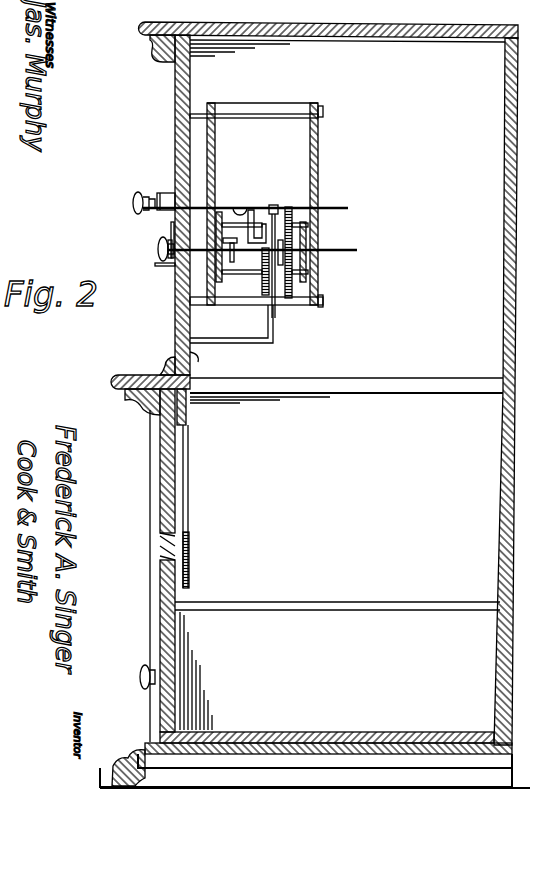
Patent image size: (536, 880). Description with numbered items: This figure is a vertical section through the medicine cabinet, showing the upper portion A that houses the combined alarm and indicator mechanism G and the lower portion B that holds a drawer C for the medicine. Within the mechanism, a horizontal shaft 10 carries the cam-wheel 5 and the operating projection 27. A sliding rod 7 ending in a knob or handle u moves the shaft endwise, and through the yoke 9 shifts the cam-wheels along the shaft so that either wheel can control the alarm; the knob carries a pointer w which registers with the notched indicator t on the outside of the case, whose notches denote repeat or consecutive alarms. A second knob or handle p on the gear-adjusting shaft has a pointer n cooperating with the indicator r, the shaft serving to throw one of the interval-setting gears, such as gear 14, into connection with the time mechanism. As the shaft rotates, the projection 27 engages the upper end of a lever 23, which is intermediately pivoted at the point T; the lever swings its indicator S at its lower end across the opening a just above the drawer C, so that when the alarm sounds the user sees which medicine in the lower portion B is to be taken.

The upper portion A is at (189, 128).
The combined alarm and indicator mechanism G is at (262, 218).
The sliding rod 7 is at (341, 206).
The yoke 9 is at (237, 210).
The cam-wheel 5 is at (253, 212).
The gear 14 is at (262, 297).
The operating projection 27 is at (276, 204).
The shaft 10 is at (291, 210).
The pointer n is at (168, 232).
The indicator t is at (171, 215).
The indicator r is at (166, 268).
The handle or knob p is at (165, 252).
The knob or handle u is at (132, 204).
The pointer w is at (158, 194).
The pivot point T is at (198, 362).
The lever 23 is at (190, 472).
The indicator S is at (191, 574).
The opening a is at (168, 548).
The lower portion B is at (337, 549).
The drawer C is at (256, 671).